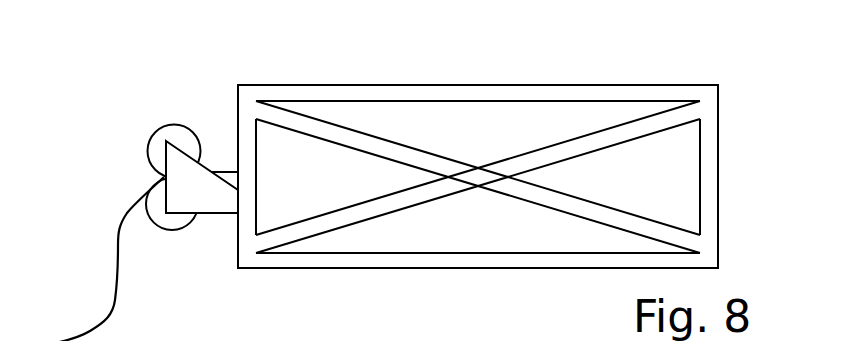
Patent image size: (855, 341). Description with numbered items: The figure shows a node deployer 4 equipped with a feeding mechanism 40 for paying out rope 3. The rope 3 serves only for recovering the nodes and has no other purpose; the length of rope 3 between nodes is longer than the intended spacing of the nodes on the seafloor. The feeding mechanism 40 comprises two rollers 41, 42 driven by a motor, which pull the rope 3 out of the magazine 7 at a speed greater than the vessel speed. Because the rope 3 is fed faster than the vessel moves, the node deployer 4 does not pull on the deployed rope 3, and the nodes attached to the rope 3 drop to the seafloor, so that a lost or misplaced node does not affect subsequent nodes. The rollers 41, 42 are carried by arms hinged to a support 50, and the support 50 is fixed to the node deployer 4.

The rope 3 is at (116, 285).
The node deployer 4 is at (501, 70).
The magazine 7 is at (495, 232).
The feeding mechanism 40 is at (149, 191).
The first roller 41 is at (175, 140).
The second roller 42 is at (167, 220).
The support 50 is at (193, 199).